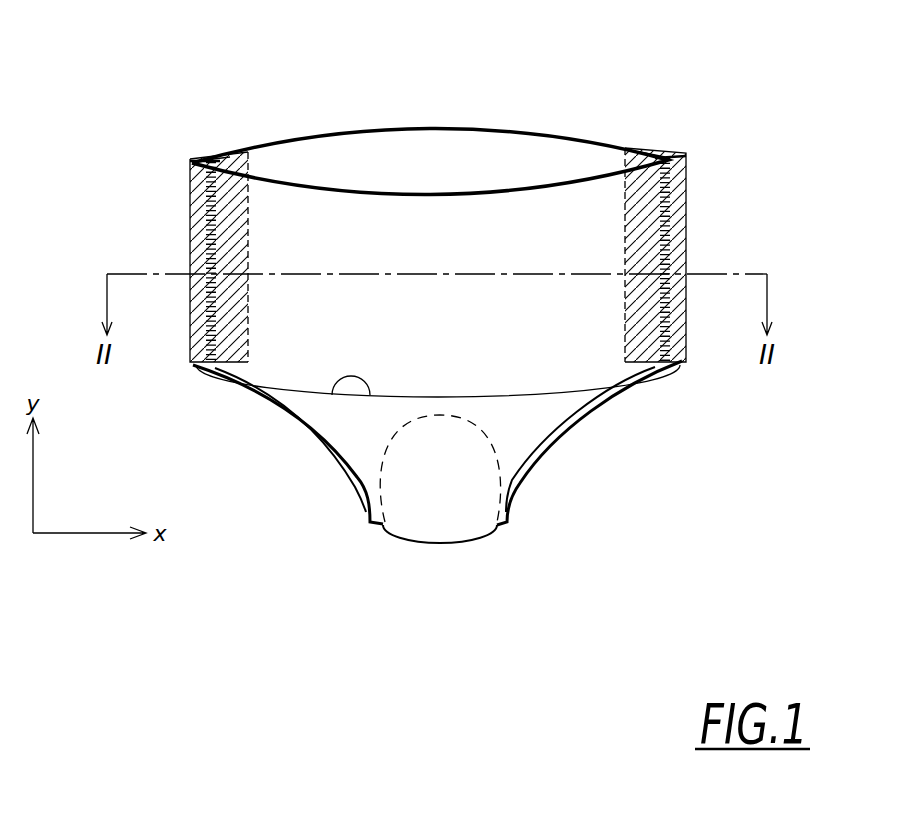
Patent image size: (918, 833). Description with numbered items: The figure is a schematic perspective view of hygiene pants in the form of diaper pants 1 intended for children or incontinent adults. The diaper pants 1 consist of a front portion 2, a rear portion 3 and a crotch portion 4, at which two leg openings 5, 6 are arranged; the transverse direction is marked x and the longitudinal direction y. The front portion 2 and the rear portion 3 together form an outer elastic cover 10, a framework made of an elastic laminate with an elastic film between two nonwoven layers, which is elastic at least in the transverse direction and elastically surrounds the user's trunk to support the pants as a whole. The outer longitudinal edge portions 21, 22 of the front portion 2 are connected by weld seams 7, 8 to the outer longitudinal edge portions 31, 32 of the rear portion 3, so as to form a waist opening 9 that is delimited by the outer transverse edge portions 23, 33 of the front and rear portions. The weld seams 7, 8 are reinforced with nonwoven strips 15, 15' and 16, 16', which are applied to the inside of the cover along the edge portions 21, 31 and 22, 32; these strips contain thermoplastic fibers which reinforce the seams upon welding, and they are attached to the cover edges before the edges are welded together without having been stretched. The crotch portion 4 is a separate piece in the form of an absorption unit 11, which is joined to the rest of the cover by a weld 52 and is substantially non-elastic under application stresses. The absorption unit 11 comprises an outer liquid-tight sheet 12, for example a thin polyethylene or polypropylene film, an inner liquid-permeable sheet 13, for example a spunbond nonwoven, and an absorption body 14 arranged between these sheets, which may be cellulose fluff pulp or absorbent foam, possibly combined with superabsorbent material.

The diaper pants 1 is at (706, 156).
The front portion 2 is at (498, 334).
The rear portion 3 is at (327, 167).
The crotch portion 4 is at (515, 445).
The leg opening 5 is at (332, 445).
The leg opening 6 is at (583, 417).
The weld seam 7 is at (210, 243).
The weld seam 8 is at (667, 240).
The waist opening 9 is at (538, 163).
The outer elastic cover 10 is at (295, 360).
The absorption unit 11 is at (458, 522).
The outer liquid-tight sheet 12 is at (373, 443).
The inner liquid-permeable sheet 13 is at (520, 485).
The absorption body 14 is at (428, 497).
The nonwoven strip 15 is at (235, 88).
The nonwoven strip 15' is at (144, 184).
The nonwoven strip 16 is at (662, 87).
The nonwoven strip 16' is at (737, 176).
The outer longitudinal edge portion 21 is at (247, 378).
The outer longitudinal edge portion 22 is at (643, 370).
The outer transverse edge portion 23 is at (413, 220).
The outer longitudinal edge portion 31 is at (215, 163).
The outer longitudinal edge portion 32 is at (663, 160).
The outer transverse edge portion 33 is at (503, 132).
The weld 52 is at (343, 395).